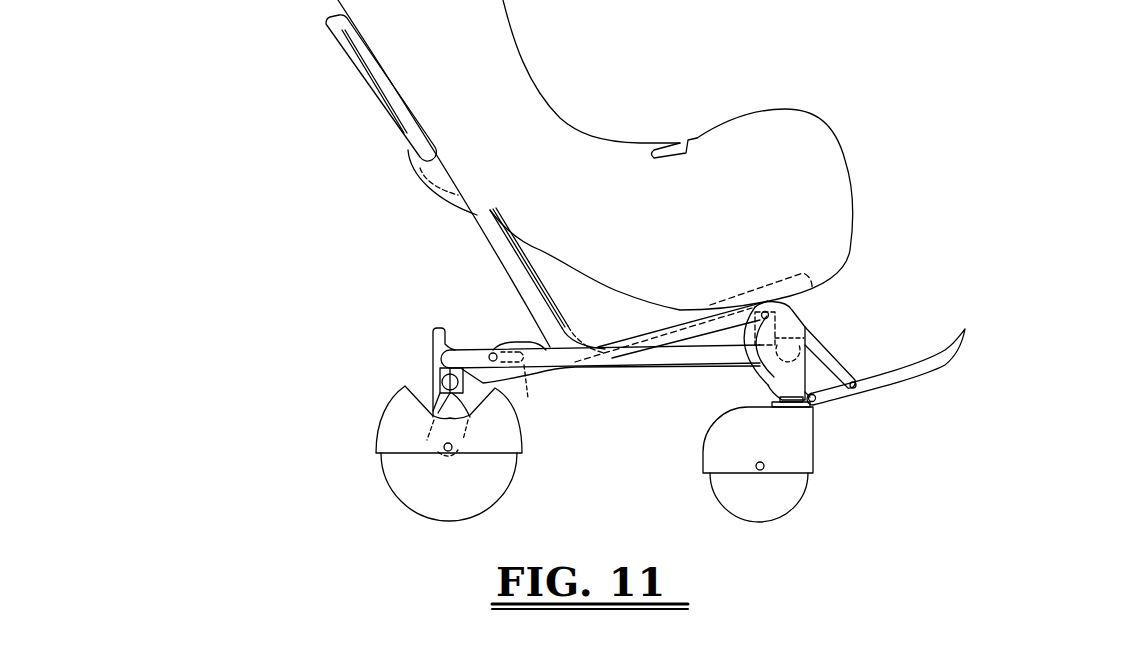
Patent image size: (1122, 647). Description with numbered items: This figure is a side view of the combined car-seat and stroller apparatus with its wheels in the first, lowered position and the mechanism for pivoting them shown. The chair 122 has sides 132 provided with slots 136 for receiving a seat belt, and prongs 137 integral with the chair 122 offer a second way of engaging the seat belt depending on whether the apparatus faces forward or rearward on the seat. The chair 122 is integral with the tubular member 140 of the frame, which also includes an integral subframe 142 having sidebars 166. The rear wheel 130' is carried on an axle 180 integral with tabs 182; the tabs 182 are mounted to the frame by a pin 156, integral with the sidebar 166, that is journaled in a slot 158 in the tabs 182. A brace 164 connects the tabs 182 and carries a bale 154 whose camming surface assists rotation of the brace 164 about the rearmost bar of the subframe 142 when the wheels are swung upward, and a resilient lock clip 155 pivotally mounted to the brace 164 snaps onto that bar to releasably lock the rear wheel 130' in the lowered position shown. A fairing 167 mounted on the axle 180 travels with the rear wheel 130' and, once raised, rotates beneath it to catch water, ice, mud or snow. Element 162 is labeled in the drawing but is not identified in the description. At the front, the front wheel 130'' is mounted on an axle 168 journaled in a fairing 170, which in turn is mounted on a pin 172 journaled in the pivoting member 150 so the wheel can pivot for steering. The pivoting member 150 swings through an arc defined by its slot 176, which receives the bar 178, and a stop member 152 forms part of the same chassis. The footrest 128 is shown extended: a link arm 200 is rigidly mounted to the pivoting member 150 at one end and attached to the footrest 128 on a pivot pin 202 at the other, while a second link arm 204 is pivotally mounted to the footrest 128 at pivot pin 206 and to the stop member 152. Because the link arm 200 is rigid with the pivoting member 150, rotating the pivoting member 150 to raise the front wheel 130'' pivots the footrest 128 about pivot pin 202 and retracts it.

The chair 122 is at (543, 50).
The prongs 137 is at (362, 80).
The slots 136 is at (670, 160).
The sides of chair 132 is at (790, 189).
The tubular member 140 is at (490, 245).
The sidebar 166 is at (626, 365).
The subframe 142 is at (682, 366).
The tabs 182 is at (521, 342).
The pin 156 is at (492, 353).
The slot 158 is at (532, 385).
The lock clip 155 is at (434, 338).
The brace 164 is at (438, 368).
The bale 154 is at (433, 413).
The fork arm 162 is at (471, 416).
The fairings 167 is at (378, 417).
The axle 180 is at (453, 447).
The rear wheel 130' is at (423, 487).
The bar 178 is at (793, 302).
The pivoting member 150 is at (793, 318).
The slot 176 is at (760, 376).
The stop member 152 is at (805, 338).
The pin 172 is at (770, 393).
The fairing 170 is at (780, 438).
The axle 168 is at (783, 457).
The front wheel 130'' is at (787, 497).
The link arm 200 is at (838, 356).
The pivot pin 202 is at (857, 386).
The footrest 128 is at (933, 363).
The second link arm 204 is at (815, 401).
The pivot pin 206 is at (814, 403).